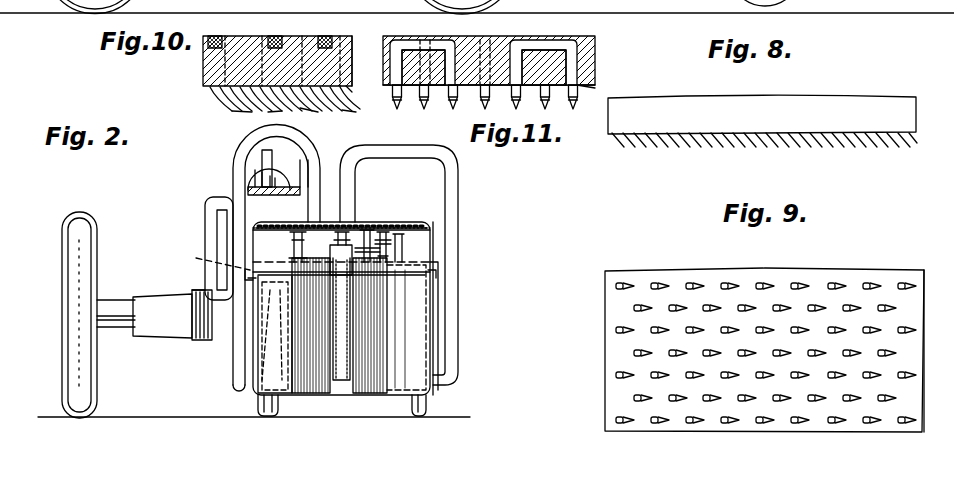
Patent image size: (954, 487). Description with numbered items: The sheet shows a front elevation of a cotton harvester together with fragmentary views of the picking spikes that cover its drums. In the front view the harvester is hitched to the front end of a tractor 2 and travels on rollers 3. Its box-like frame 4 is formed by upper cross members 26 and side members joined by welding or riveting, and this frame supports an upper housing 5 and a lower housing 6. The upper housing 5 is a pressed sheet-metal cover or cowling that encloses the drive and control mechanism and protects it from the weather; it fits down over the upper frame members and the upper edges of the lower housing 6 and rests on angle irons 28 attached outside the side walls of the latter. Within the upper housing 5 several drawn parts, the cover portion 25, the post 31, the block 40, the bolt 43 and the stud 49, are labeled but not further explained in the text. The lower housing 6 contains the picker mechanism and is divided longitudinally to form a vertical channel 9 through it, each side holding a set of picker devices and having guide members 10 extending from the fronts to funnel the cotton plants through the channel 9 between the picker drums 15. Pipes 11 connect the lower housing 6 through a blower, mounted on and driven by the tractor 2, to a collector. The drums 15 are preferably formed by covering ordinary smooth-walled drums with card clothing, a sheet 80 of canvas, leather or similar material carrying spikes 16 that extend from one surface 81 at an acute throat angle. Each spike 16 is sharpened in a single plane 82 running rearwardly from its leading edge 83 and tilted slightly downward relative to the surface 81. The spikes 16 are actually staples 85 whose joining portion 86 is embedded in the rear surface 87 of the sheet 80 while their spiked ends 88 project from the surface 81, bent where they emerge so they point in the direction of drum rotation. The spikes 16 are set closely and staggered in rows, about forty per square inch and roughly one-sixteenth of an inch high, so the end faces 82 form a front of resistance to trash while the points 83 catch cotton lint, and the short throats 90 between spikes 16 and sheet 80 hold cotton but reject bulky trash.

In FIG. 2, the tractor 2 is at (205, 235).
In FIG. 2, the rollers 3 is at (268, 417).
In FIG. 2, the box-like frame 4 is at (426, 261).
In FIG. 2, the upper housing 5 is at (390, 224).
In FIG. 2, the lower housing 6 is at (444, 331).
In FIG. 2, the vertical channel 9 is at (346, 400).
In FIG. 2, the guide members 10 is at (314, 396).
In FIG. 2, the pipes 11 is at (233, 163).
In FIG. 2, the drums 15 is at (352, 340).
In FIG. 10, the spikes 16 is at (340, 110).
In FIG. 11, the spikes 16 is at (400, 110).
In FIG. 8, the spikes 16 is at (790, 146).
In FIG. 9, the spikes 16 is at (796, 280).
In FIG. 2, the housing top cover 25 is at (290, 232).
In FIG. 2, the front upper cross member 26 is at (220, 262).
In FIG. 2, the angle irons 28 is at (250, 278).
In FIG. 2, the spring post 31 is at (401, 246).
In FIG. 2, the mounting block 40 is at (330, 250).
In FIG. 2, the bolt 43 is at (300, 262).
In FIG. 2, the stud 49 is at (375, 230).
In FIG. 10, the sheet 80 is at (203, 68).
In FIG. 11, the sheet 80 is at (595, 52).
In FIG. 8, the sheet 80 is at (846, 96).
In FIG. 9, the sheet 80 is at (860, 272).
In FIG. 10, the surface 81 is at (210, 87).
In FIG. 11, the surface 81 is at (597, 88).
In FIG. 8, the surface 81 is at (896, 150).
In FIG. 9, the surface 81 is at (922, 295).
In FIG. 10, the plane 82 is at (240, 112).
In FIG. 8, the plane 82 is at (718, 148).
In FIG. 10, the leading edges 83 is at (300, 110).
In FIG. 8, the leading edges 83 is at (834, 146).
In FIG. 10, the staples 85 is at (325, 36).
In FIG. 11, the staples 85 is at (566, 40).
In FIG. 10, the joining portion 86 is at (275, 36).
In FIG. 11, the joining portion 86 is at (528, 38).
In FIG. 10, the rear surface 87 is at (348, 36).
In FIG. 11, the rear surface 87 is at (482, 30).
In FIG. 10, the spiked ends 88 is at (352, 92).
In FIG. 11, the spiked ends 88 is at (586, 86).
In FIG. 10, the throats 90 is at (270, 112).
In FIG. 8, the throats 90 is at (752, 146).